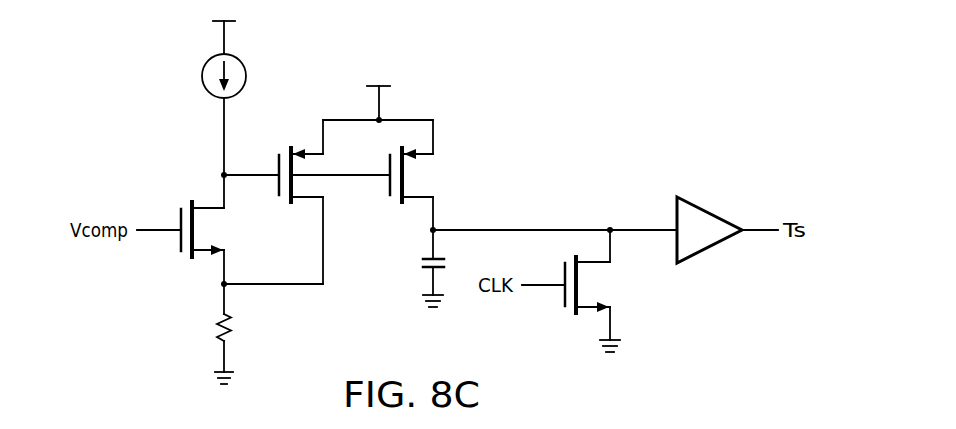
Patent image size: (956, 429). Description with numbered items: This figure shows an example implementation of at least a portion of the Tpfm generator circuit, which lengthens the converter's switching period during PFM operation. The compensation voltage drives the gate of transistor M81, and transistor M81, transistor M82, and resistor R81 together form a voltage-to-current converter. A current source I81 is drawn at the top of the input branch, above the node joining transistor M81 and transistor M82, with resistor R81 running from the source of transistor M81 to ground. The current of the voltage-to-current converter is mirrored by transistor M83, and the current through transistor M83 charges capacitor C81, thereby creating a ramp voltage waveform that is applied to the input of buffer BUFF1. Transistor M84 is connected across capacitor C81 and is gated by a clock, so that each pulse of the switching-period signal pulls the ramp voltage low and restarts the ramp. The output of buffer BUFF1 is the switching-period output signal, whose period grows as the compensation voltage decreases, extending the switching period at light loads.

The current source I81 is at (208, 76).
The transistor M81 is at (200, 229).
The transistor M82 is at (294, 161).
The transistor M83 is at (428, 175).
The transistor M84 is at (584, 291).
The resistor R81 is at (242, 349).
The capacitor C81 is at (415, 268).
The buffer BUFF1 is at (727, 217).